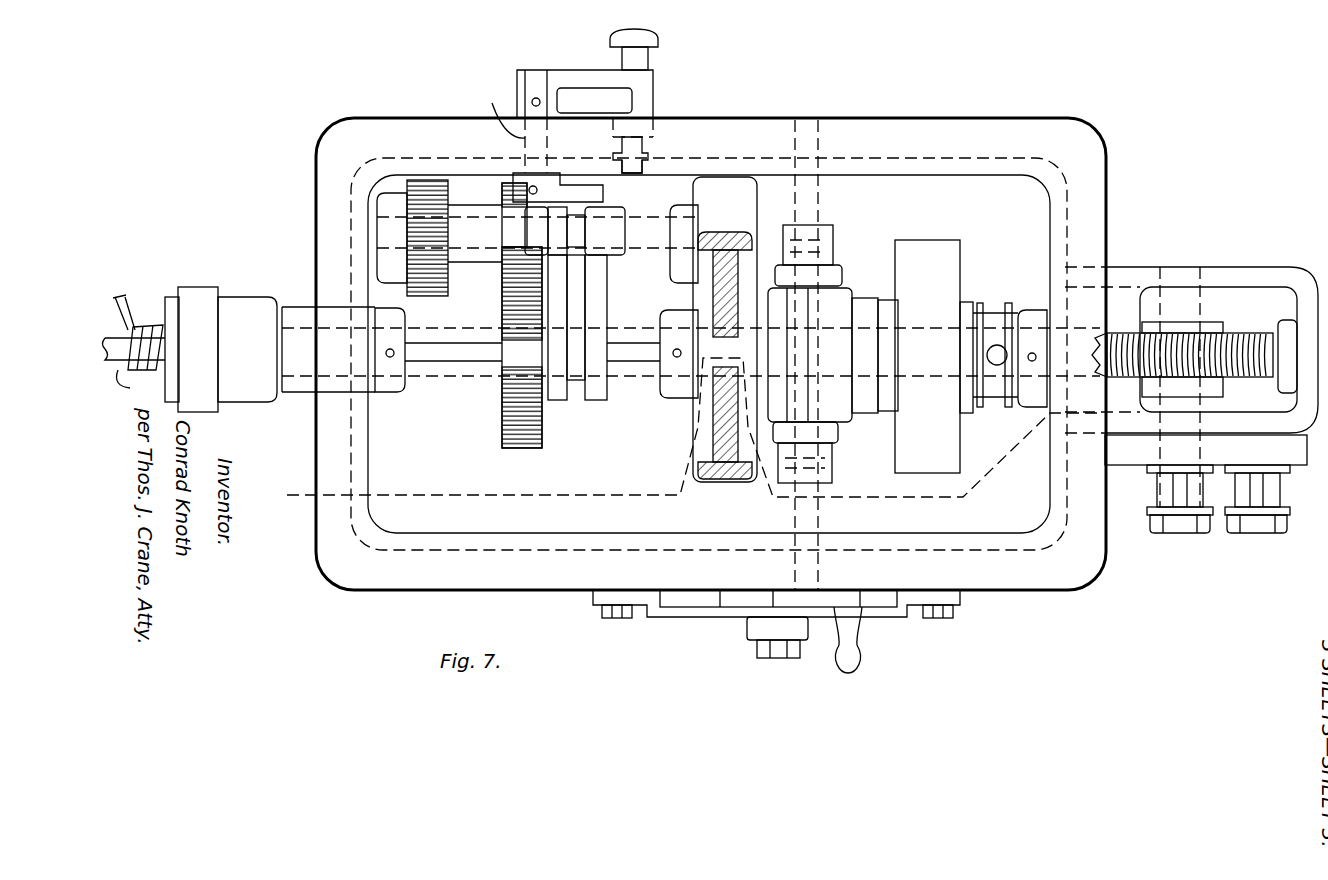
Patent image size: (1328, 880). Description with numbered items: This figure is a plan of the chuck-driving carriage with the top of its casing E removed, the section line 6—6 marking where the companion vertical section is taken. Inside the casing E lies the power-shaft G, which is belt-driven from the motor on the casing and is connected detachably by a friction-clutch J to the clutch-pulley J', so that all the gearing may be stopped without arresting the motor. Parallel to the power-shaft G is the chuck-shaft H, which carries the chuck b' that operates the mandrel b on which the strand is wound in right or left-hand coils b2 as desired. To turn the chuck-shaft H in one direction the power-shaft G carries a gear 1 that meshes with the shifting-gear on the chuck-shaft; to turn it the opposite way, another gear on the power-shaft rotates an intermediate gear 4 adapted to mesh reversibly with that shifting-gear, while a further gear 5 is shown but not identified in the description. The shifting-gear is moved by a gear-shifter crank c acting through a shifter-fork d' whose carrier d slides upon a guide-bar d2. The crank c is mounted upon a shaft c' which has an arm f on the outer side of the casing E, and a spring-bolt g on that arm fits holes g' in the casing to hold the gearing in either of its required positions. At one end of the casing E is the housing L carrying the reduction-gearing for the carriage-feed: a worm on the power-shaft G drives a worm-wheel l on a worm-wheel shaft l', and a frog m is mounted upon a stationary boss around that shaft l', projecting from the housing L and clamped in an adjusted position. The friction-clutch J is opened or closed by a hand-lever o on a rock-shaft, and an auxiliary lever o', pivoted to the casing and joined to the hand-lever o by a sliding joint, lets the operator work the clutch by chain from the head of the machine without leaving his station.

The casing E is at (330, 202).
The mandrel b is at (190, 356).
The chuck b' is at (198, 334).
The coils b2 is at (145, 327).
The chuck-shaft H is at (440, 378).
The gear wheel 5 is at (450, 293).
The intermediate gear 4 is at (503, 195).
The gear 1 is at (500, 420).
The guide-bar d2 is at (524, 226).
The gear-shifter crank c is at (587, 219).
The shifter-fork d' is at (621, 241).
The carrier d is at (577, 358).
The shaft c' is at (535, 144).
The arm f is at (577, 69).
The spring-bolt g is at (659, 101).
The holes g' is at (669, 153).
The friction-clutch J is at (795, 330).
The clutch-pulley J' is at (944, 356).
The power-shaft G is at (1035, 380).
The section line 6— 6 is at (768, 427).
The housing L is at (1237, 273).
The worm-wheel l is at (1194, 349).
The frog m is at (1206, 450).
The worm-wheel shaft l' is at (1167, 499).
The hand-lever o is at (1265, 499).
The auxiliary lever o' is at (777, 638).